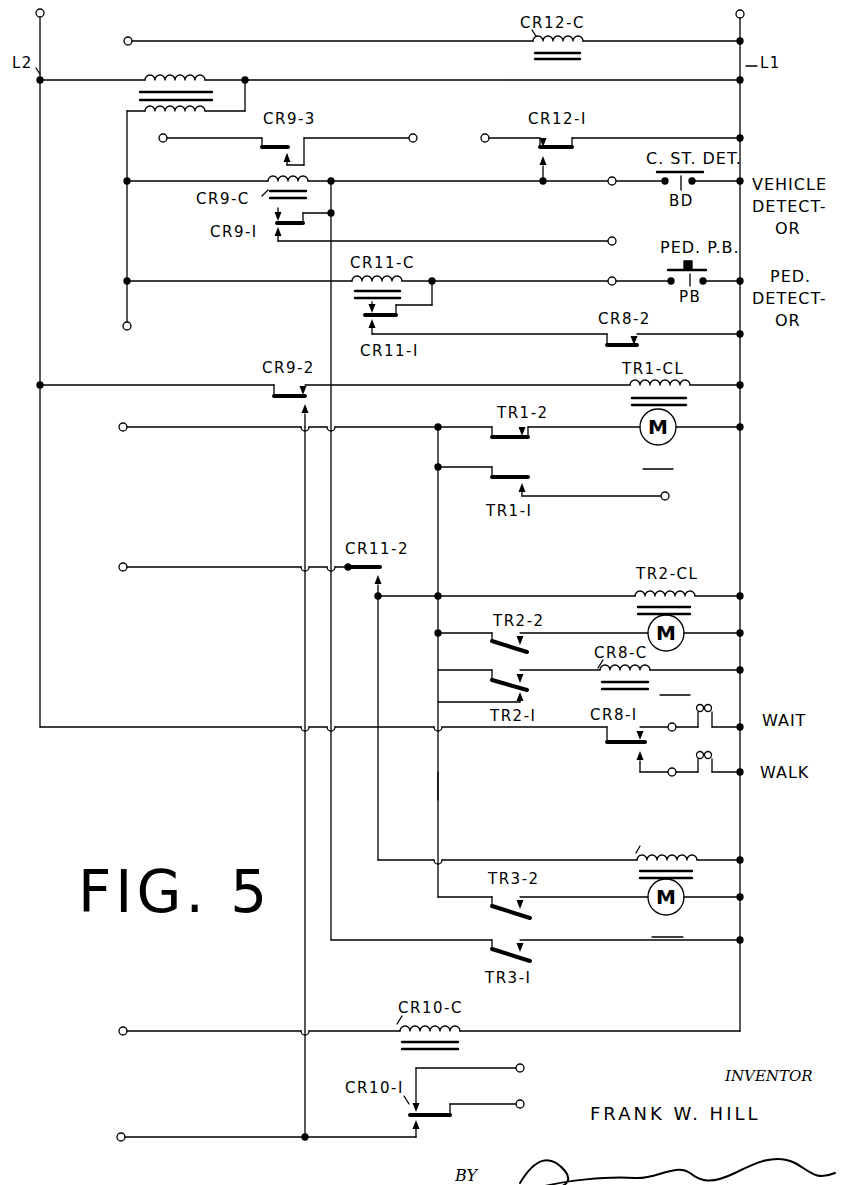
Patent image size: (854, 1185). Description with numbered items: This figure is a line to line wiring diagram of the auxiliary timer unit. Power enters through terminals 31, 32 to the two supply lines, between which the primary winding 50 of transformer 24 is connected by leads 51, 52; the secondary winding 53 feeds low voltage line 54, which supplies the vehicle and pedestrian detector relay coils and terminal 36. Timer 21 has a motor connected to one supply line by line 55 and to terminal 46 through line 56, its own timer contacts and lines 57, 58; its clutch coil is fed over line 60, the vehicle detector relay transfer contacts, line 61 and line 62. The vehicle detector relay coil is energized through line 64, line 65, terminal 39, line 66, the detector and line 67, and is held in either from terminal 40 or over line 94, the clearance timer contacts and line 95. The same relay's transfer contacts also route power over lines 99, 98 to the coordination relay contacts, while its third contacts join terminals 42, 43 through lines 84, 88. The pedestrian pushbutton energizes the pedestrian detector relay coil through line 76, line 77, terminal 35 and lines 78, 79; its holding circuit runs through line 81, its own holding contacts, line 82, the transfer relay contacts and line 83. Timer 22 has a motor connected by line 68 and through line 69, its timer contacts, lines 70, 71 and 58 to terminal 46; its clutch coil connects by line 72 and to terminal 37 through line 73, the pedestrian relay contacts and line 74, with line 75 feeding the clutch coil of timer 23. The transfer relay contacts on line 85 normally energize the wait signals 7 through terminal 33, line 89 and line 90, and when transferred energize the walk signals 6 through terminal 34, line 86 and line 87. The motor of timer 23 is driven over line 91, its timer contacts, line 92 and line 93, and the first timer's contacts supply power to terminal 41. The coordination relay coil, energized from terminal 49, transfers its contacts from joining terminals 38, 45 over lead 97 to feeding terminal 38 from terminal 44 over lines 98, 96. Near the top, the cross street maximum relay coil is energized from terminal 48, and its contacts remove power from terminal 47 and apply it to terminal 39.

The terminal 32 is at (44, 14).
The terminal 31 is at (745, 16).
The terminal 48 is at (131, 38).
The lead 52 is at (106, 78).
The transformer 24 is at (170, 92).
The primary winding 50 is at (196, 76).
The secondary winding 53 is at (198, 113).
The lead 51 is at (384, 78).
The line 54 is at (124, 241).
The terminal 36 is at (130, 338).
The terminal 43 is at (149, 138).
The line 88 is at (204, 139).
The line 84 is at (384, 137).
The terminal 42 is at (426, 138).
The terminal 47 is at (601, 154).
The line 64 is at (204, 179).
The line 65 is at (396, 180).
The terminal 39 is at (612, 170).
The line 66 is at (632, 186).
The line 67 is at (727, 186).
The terminal 40 is at (446, 231).
The line 79 is at (228, 278).
The line 78 is at (529, 281).
The terminal 35 is at (605, 271).
The line 77 is at (636, 284).
The line 76 is at (721, 292).
The line 81 is at (432, 291).
The line 82 is at (533, 335).
The line 83 is at (707, 336).
The line 60 is at (208, 384).
The line 61 is at (537, 384).
The line 62 is at (727, 384).
The terminal 46 is at (109, 427).
The line 58 is at (223, 425).
The line 57 is at (477, 426).
The line 56 is at (606, 426).
The line 55 is at (721, 426).
The timer 21 is at (728, 438).
The line 99 is at (296, 506).
The line 95 is at (336, 480).
The line 71 is at (434, 515).
The terminal 41 is at (608, 495).
The terminal 37 is at (109, 566).
The line 74 is at (230, 566).
The line 73 is at (528, 596).
The line 72 is at (711, 597).
The line 70 is at (475, 633).
The line 69 is at (615, 633).
The line 68 is at (727, 633).
The timer 22 is at (732, 644).
The line 75 is at (380, 650).
The line 85 is at (245, 724).
The terminal 33 is at (662, 717).
The line 89 is at (682, 729).
The wait signals 7 is at (700, 704).
The line 90 is at (716, 729).
The terminal 34 is at (672, 778).
The line 86 is at (693, 779).
The walk signals 6 is at (709, 747).
The line 87 is at (737, 773).
The line 91 is at (444, 780).
The timer 23 is at (597, 883).
The line 92 is at (608, 897).
The line 93 is at (721, 897).
The line 94 is at (608, 938).
The terminal 49 is at (414, 1035).
The conductor to contact CR10-1 97 is at (475, 1066).
The terminal 45 is at (524, 1064).
The line 96 is at (492, 1103).
The terminal 38 is at (526, 1101).
The line 98 is at (226, 1134).
The terminal 44 is at (107, 1137).